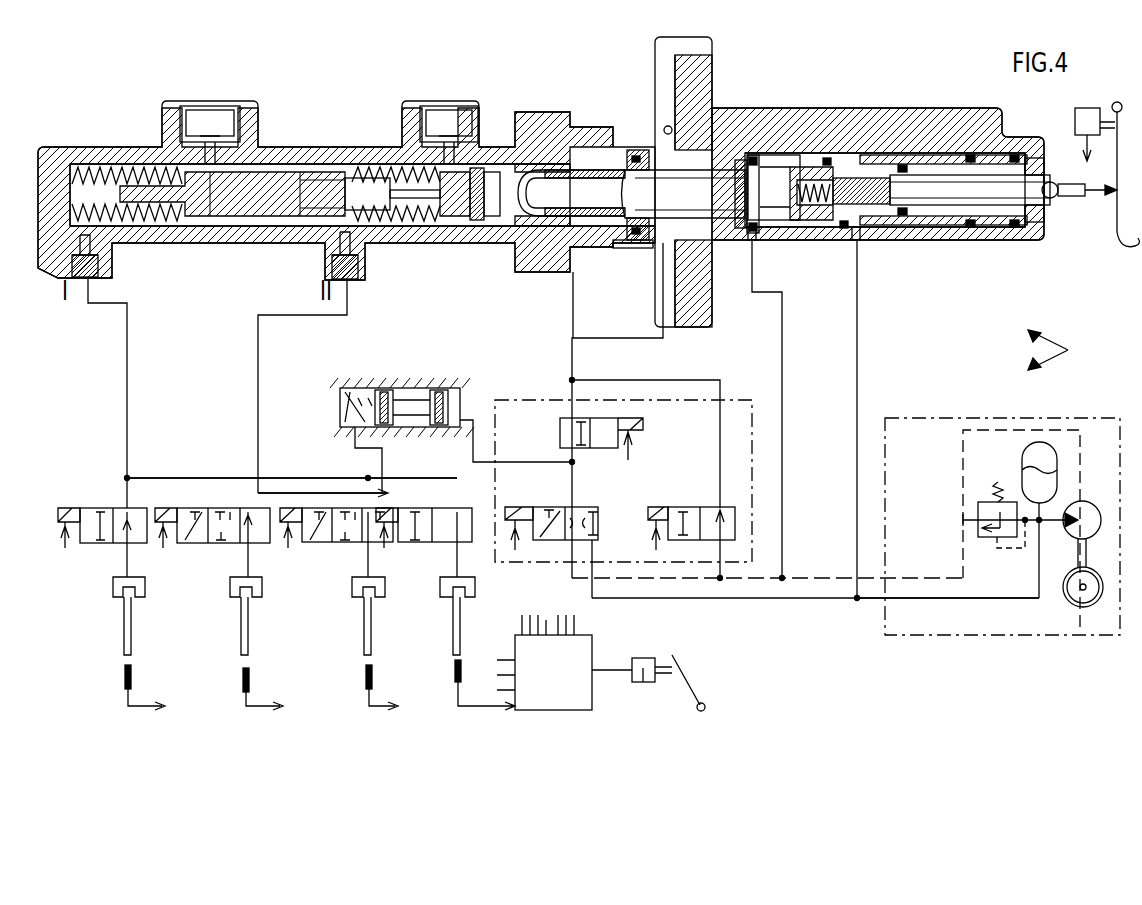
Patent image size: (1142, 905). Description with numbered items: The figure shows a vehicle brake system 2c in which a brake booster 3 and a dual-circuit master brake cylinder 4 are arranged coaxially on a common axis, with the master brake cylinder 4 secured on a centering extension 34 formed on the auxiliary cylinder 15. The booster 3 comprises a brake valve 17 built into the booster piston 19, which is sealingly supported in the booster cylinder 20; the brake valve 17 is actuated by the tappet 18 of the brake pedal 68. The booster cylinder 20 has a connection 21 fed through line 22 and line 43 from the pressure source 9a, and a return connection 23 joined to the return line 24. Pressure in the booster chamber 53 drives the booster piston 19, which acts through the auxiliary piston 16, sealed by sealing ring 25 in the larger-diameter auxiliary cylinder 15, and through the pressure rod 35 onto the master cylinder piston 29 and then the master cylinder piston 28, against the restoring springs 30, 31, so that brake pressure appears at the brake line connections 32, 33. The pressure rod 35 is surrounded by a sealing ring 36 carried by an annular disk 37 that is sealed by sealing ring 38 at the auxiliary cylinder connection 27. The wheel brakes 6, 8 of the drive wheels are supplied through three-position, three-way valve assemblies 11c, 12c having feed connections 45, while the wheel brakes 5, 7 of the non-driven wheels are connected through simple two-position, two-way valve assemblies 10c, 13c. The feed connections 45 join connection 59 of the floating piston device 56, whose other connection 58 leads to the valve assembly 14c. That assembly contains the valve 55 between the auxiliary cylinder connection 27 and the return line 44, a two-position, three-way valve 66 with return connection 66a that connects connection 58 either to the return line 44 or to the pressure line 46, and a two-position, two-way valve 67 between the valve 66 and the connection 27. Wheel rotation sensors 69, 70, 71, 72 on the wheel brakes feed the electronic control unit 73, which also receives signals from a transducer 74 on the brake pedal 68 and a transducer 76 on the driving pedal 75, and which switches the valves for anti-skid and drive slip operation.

The vehicle brake system 2c is at (1062, 350).
The brake booster 3 is at (972, 108).
The master brake cylinder 4 is at (332, 130).
The wheel brake 5 is at (475, 584).
The wheel brake 6 is at (385, 584).
The wheel brake 7 is at (145, 584).
The wheel brake 8 is at (262, 586).
The pressure source 9a is at (1080, 418).
The valve assembly 10c is at (104, 508).
The valve assembly 11c is at (218, 508).
The valve assembly 12c is at (312, 535).
The valve assembly 13c is at (478, 500).
The valve assembly 14c is at (516, 400).
The auxiliary cylinder 15 is at (742, 160).
The auxiliary piston 16 is at (770, 167).
The brake valve 17 is at (870, 160).
The tappet 18 is at (1080, 198).
The booster piston 19 is at (950, 155).
The booster cylinder 20 is at (1015, 232).
The connection 21 is at (858, 240).
The line 22 is at (857, 364).
The return connection 23 is at (754, 240).
The return line 24 is at (782, 370).
The sealing ring 25 is at (752, 155).
The auxiliary cylinder connection 27 is at (712, 272).
The master cylinder piston 28 is at (262, 180).
The master cylinder piston 29 is at (492, 168).
The restoring spring 30 is at (118, 164).
The restoring spring 31 is at (400, 178).
The brake line connection 32 is at (100, 270).
The brake line connection 33 is at (350, 272).
The centering extension 34 is at (536, 112).
The pressure rod 35 is at (680, 170).
The sealing ring 36 is at (628, 150).
The annular disk 37 is at (655, 150).
The sealing ring 38 is at (650, 248).
The line 43 is at (870, 604).
The return line 44 is at (820, 578).
The feed connection 45 is at (258, 493).
The pressure line 46 is at (690, 598).
The booster chamber 53 is at (905, 216).
The valve 55 is at (733, 507).
The floating piston device 56 is at (366, 370).
The connection 58 is at (473, 430).
The connection 59 is at (356, 430).
The 3/2-way valve 66 is at (596, 507).
The return connection 66a is at (570, 545).
The 2/2-way valve 67 is at (618, 418).
The brake pedal 68 is at (1125, 246).
The wheel rotation sensor 69 is at (455, 663).
The wheel rotation sensor 70 is at (366, 670).
The wheel rotation sensor 71 is at (132, 668).
The wheel rotation sensor 72 is at (250, 676).
The electronic control unit 73 is at (580, 688).
The signal transducer 74 is at (1075, 112).
The driving pedal 75 is at (684, 680).
The signal transducer 76 is at (647, 685).